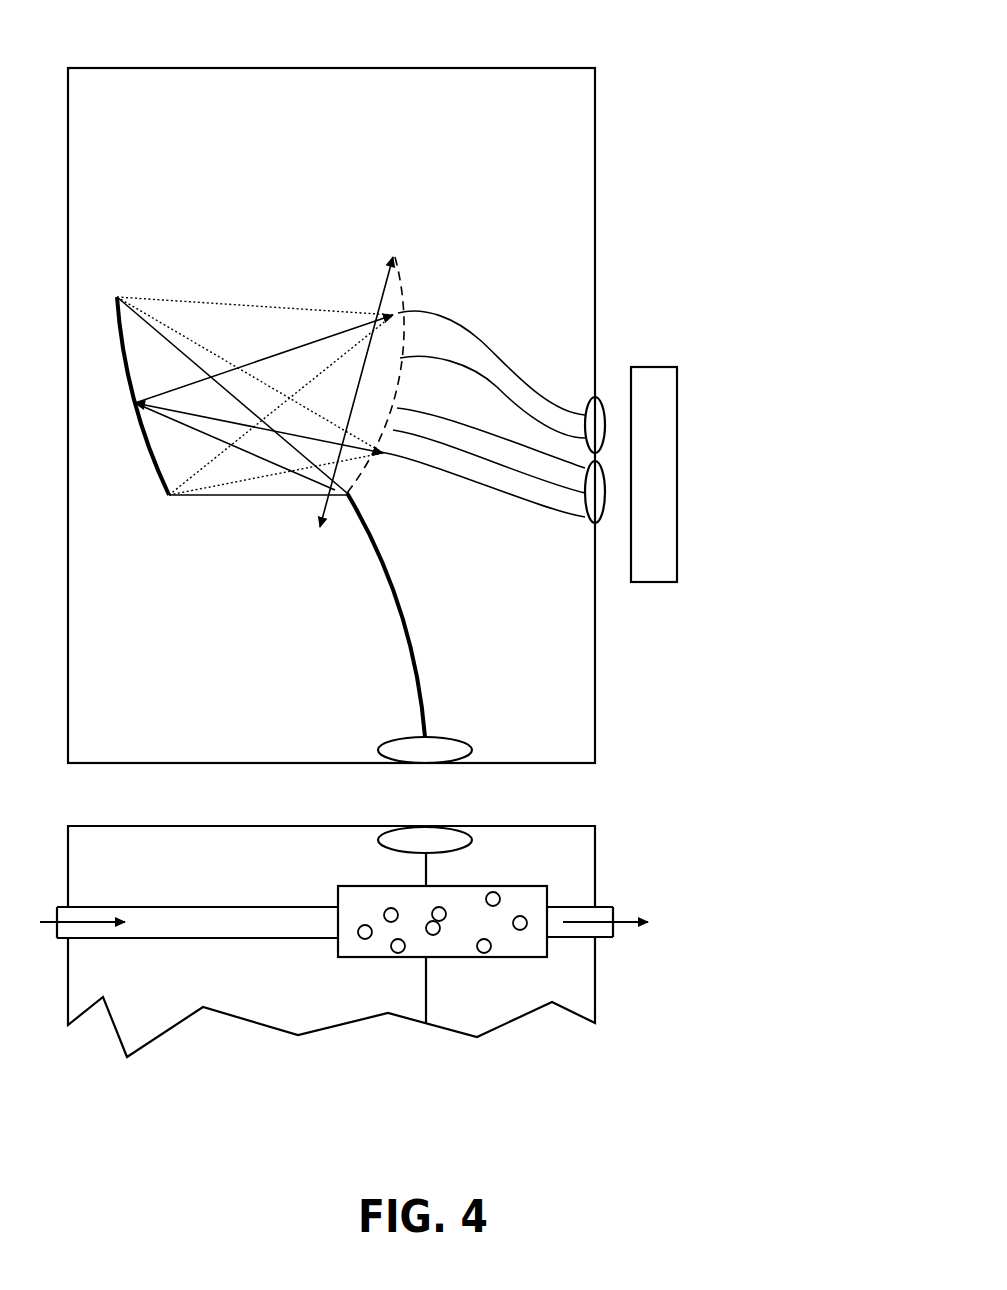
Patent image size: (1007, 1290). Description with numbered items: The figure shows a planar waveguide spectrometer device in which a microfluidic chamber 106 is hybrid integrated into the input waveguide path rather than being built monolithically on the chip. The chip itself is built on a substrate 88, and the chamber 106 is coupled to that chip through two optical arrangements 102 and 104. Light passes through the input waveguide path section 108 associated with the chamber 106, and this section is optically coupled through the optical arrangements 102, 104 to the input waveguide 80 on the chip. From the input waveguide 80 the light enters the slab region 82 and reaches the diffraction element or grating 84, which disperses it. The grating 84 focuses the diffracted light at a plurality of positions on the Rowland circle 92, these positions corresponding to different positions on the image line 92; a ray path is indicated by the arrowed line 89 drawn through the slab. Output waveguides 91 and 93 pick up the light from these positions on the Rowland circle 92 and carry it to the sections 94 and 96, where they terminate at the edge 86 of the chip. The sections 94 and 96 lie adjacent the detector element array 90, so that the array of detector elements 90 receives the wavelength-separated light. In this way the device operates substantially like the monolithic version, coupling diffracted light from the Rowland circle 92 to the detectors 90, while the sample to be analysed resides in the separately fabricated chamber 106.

The input waveguide 80 is at (412, 645).
The slab region 82 is at (255, 505).
The diffraction element or grating 84 is at (145, 447).
The edge 86 is at (597, 92).
The substrate 88 is at (370, 95).
The optical axis 89 is at (387, 290).
The detector element array 90 is at (677, 468).
The output waveguides 91 is at (505, 442).
The Rowland circle 92 is at (400, 288).
The output waveguides 93 is at (500, 385).
The section 94 is at (605, 525).
The section 96 is at (598, 398).
The optical arrangement 102 is at (438, 757).
The optical arrangement 104 is at (440, 832).
The chamber 106 is at (350, 885).
The input waveguide path section 108 is at (428, 980).